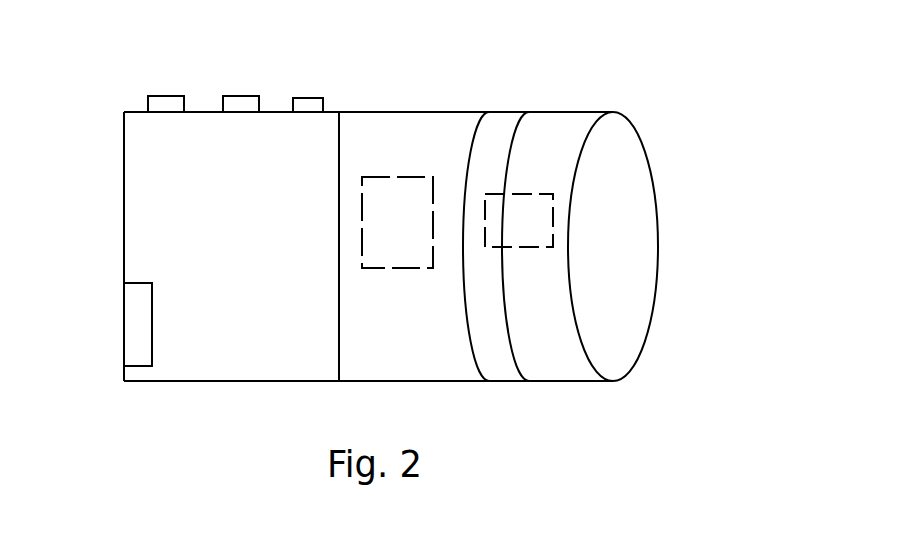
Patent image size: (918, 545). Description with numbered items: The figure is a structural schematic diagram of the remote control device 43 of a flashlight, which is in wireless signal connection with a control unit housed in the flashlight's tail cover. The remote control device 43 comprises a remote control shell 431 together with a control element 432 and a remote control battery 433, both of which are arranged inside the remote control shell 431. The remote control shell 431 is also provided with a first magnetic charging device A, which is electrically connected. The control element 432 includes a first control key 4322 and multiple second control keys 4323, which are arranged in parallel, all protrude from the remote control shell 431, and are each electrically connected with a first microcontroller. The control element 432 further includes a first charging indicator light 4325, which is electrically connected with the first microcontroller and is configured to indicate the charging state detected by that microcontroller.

The first magnetic charging device A is at (135, 332).
The remote control device 43 is at (641, 218).
The remote control shell 431 is at (651, 318).
The control element 432 is at (504, 214).
The remote control battery 433 is at (543, 194).
The first control key 4322 is at (284, 72).
The second control keys 4323 is at (343, 74).
The first charging indicator light 4325 is at (483, 86).